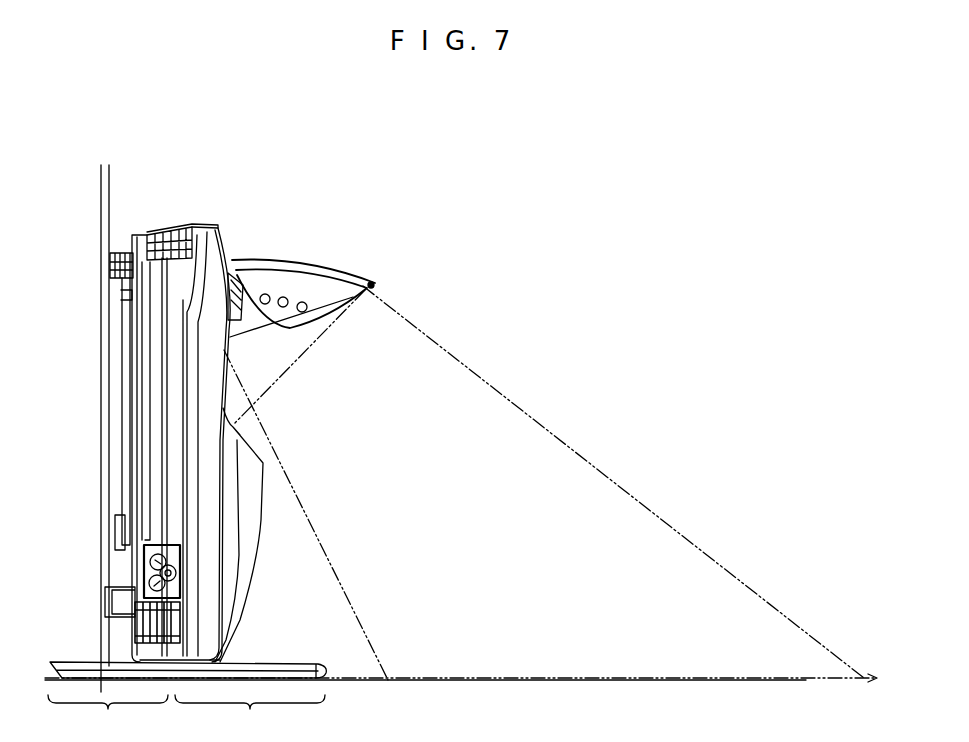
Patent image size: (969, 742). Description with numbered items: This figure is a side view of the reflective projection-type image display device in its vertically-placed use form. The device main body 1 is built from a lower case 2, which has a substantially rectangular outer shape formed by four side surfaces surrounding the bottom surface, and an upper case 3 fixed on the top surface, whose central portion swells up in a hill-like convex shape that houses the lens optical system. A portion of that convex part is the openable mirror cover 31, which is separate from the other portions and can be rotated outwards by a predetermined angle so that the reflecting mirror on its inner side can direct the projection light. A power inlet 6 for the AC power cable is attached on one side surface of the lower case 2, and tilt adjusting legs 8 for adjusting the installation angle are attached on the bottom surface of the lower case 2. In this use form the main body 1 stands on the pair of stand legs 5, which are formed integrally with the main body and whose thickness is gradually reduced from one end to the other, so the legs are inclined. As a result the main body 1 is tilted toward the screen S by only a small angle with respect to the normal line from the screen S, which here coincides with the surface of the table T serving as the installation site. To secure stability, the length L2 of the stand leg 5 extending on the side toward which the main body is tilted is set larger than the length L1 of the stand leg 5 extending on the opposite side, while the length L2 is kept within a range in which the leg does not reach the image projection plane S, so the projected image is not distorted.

The main body 1 is at (219, 230).
The lower case 2 is at (146, 419).
The upper case 3 is at (232, 587).
The stand leg 5 is at (290, 664).
The power inlet 6 is at (146, 567).
The tilt adjusting leg 8 is at (126, 253).
The openable mirror cover 31 is at (330, 283).
The screen S is at (640, 683).
The table T is at (358, 683).
The stand leg length on the side opposite to the tilt L1 is at (108, 714).
The stand leg length on the tilted side L2 is at (250, 714).